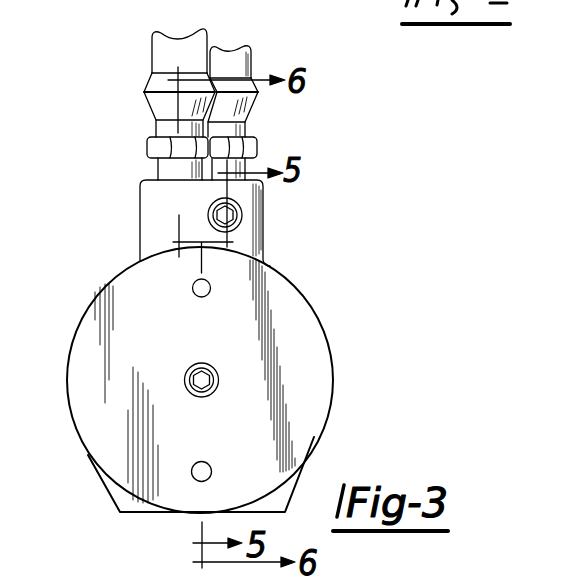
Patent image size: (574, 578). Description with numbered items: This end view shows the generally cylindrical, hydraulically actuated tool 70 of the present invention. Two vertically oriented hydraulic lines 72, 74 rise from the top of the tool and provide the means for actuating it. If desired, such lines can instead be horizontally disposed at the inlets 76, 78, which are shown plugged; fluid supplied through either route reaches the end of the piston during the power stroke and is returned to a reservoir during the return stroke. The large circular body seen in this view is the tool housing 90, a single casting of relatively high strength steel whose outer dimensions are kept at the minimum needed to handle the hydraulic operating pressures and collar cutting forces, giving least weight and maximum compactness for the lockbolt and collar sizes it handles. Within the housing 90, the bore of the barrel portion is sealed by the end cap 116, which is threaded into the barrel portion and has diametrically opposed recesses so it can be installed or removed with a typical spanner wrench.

The hydraulically actuated tool 70 is at (365, 280).
The hydraulic line 72 is at (207, 33).
The hydraulic line 74 is at (253, 58).
The inlet 76 is at (241, 348).
The inlet 78 is at (238, 222).
The tool housing 90 is at (333, 408).
The end cap 116 is at (168, 342).